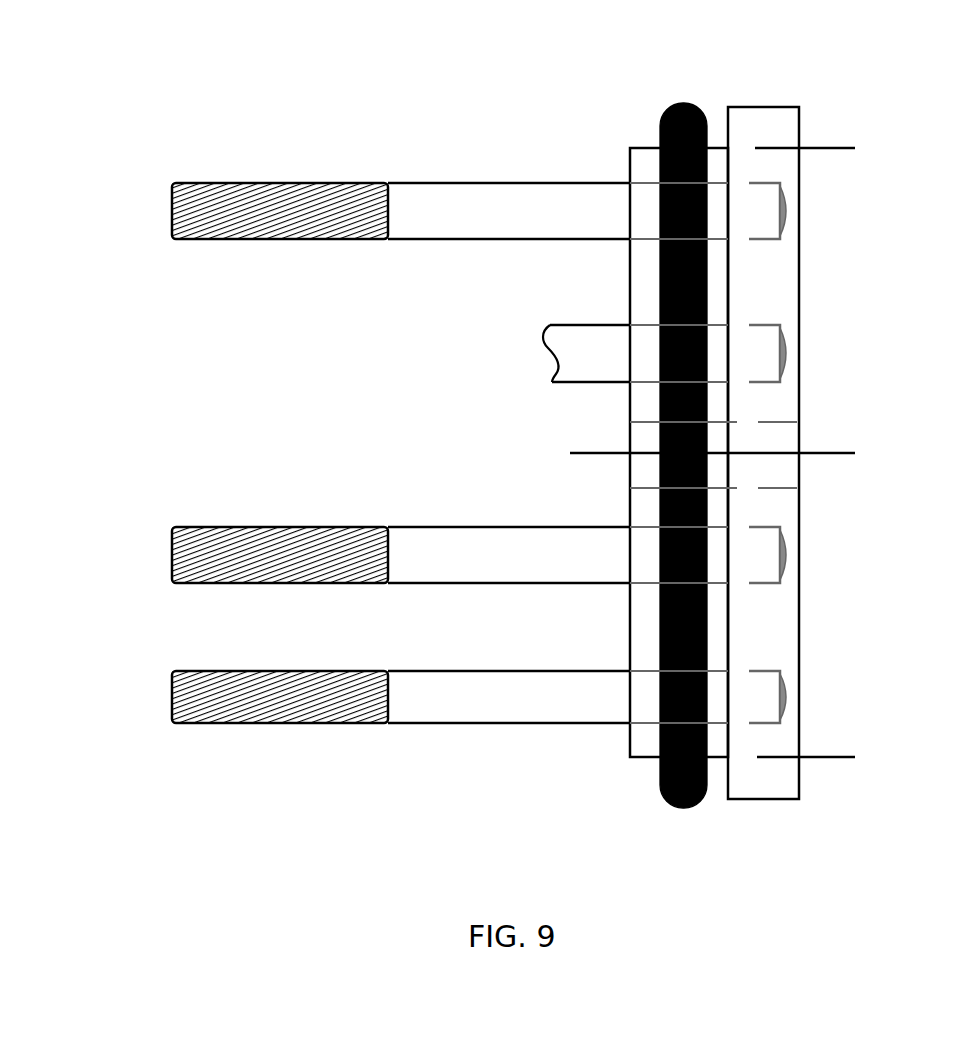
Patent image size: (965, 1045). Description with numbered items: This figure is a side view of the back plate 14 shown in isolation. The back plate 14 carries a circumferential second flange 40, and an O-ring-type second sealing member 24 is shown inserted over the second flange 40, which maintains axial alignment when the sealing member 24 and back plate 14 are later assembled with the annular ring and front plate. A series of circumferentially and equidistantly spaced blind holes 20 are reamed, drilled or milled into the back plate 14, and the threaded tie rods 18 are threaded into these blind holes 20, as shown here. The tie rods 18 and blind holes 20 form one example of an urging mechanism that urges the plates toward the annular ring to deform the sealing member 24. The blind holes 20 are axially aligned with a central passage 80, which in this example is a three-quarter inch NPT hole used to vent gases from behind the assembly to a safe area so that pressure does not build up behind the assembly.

The back plate 14 is at (762, 108).
The threaded tie rods 18 is at (188, 207).
The blind holes 20 is at (760, 205).
The second sealing member 24 is at (683, 105).
The second flange 40 is at (637, 148).
The central passage 80 is at (630, 452).